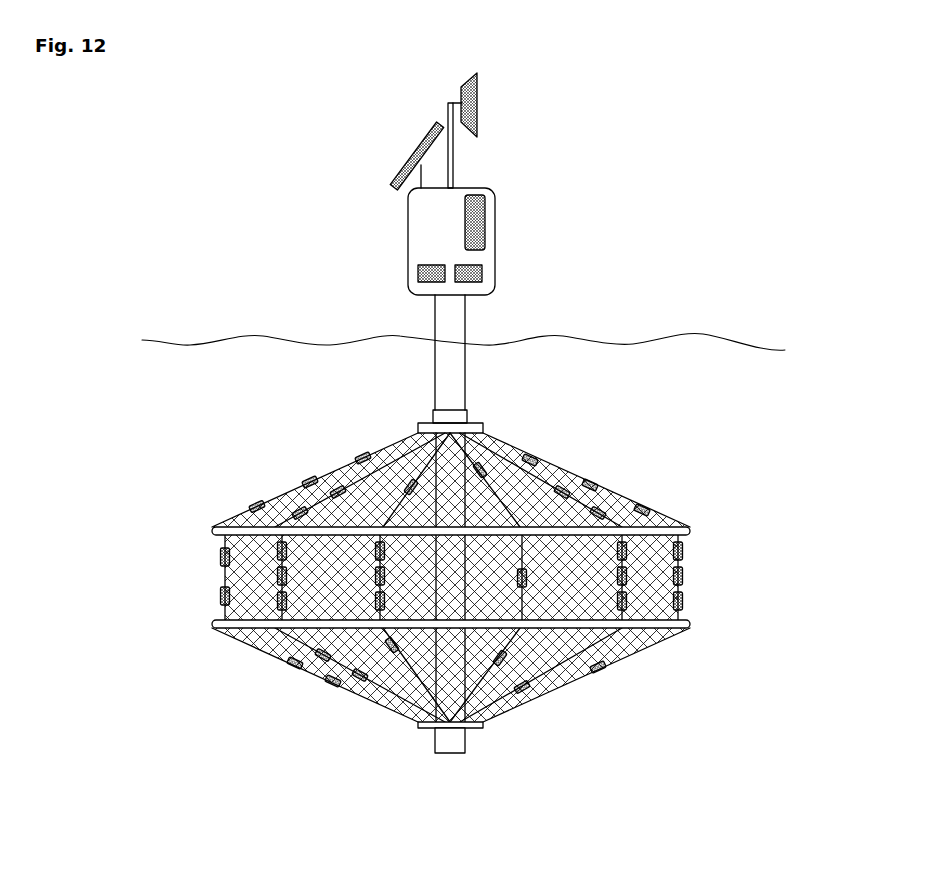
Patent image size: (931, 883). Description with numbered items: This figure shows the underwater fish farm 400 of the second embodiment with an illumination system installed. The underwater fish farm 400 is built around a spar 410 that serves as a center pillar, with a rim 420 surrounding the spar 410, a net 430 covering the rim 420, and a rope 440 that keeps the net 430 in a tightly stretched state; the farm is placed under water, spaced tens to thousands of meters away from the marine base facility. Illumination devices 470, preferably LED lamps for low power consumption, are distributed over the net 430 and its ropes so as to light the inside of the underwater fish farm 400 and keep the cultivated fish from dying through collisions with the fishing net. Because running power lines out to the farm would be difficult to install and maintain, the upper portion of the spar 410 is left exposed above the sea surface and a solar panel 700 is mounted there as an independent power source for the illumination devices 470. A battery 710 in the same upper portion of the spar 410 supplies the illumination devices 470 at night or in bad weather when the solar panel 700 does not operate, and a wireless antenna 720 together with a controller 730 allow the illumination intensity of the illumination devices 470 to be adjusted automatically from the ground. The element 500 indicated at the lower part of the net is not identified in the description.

The underwater fish farm 400 is at (378, 717).
The spar 410 is at (450, 755).
The rim 420 is at (690, 532).
The net 430 is at (580, 500).
The rope 440 is at (283, 500).
The illumination device 470 is at (540, 455).
The lower net 500 is at (528, 702).
The solar panel 700 is at (415, 152).
The battery 710 is at (418, 271).
The wireless antenna 720 is at (480, 103).
The controller 730 is at (487, 220).